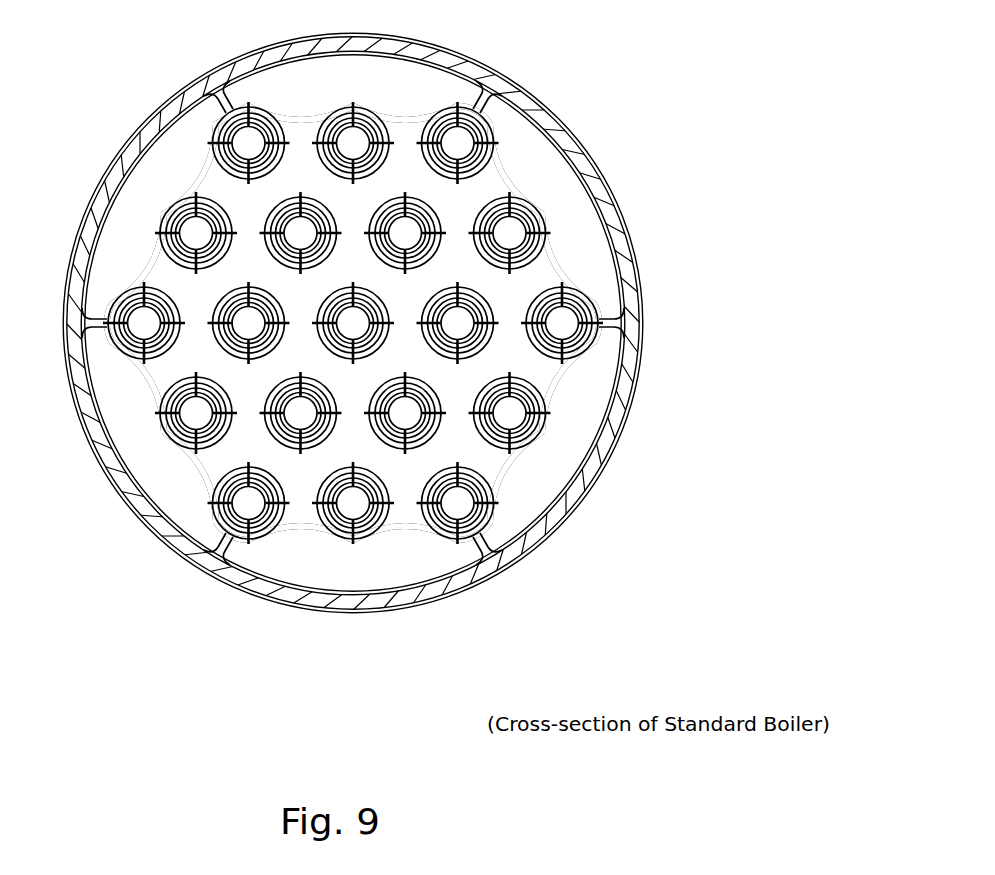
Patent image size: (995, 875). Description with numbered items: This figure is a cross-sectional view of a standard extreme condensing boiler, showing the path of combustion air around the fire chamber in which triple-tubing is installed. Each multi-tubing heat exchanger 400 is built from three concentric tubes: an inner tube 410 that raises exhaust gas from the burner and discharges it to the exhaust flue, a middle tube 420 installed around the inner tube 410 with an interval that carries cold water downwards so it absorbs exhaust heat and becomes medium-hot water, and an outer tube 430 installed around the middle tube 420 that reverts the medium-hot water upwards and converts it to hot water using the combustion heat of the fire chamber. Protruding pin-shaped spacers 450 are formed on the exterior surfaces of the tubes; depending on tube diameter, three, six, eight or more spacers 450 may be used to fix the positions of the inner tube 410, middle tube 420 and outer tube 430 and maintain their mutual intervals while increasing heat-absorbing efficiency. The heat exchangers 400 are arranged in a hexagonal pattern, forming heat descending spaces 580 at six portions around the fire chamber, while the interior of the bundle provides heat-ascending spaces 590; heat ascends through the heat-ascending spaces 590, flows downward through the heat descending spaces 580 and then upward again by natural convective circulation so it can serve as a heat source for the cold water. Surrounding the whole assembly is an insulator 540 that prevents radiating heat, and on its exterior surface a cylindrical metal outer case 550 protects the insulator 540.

The multi-tubing heat exchanger 400 is at (505, 511).
The inner tube 410 is at (426, 409).
The middle tube 420 is at (373, 432).
The outer tube 430 is at (414, 431).
The spacers 450 is at (412, 441).
The insulator 540 is at (287, 52).
The outer case 550 is at (602, 190).
The heat descending spaces 580 is at (518, 100).
The heat-ascending spaces 590 is at (480, 196).